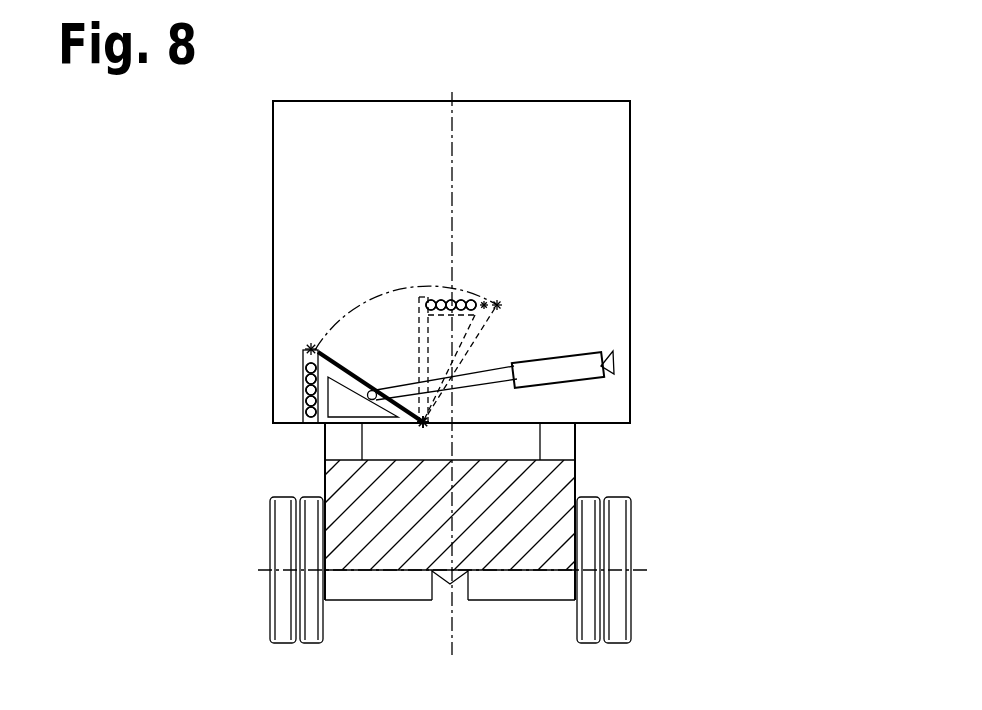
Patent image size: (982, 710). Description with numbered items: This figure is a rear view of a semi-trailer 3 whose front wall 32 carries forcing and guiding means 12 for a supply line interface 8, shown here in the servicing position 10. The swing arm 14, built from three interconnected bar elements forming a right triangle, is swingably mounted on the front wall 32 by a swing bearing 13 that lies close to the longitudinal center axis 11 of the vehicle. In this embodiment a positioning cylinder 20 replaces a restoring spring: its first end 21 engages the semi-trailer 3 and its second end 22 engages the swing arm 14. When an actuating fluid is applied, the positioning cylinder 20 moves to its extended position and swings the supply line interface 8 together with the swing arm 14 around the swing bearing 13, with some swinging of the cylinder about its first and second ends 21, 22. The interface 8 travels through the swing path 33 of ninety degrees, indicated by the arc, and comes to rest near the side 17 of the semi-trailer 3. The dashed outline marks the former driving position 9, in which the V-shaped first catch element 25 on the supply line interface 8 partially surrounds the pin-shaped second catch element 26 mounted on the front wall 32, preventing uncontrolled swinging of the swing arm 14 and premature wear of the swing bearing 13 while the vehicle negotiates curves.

The semi-trailer 3 is at (558, 170).
The front wall 32 is at (600, 170).
The side 17 is at (273, 128).
The longitudinal center axis 11 is at (453, 128).
The swing path 33 is at (375, 289).
The forcing and guiding means 12 is at (212, 285).
The first catch element 25 is at (304, 349).
The supply line interface 8 is at (305, 418).
The driving position 9 is at (588, 233).
The servicing position 10 is at (209, 404).
The second catch element 26 is at (500, 305).
The swing bearing 13 is at (423, 422).
The second end 22 is at (423, 422).
The positioning cylinder 20 is at (573, 368).
The first end 21 is at (614, 374).
The swing arm 14 is at (345, 423).